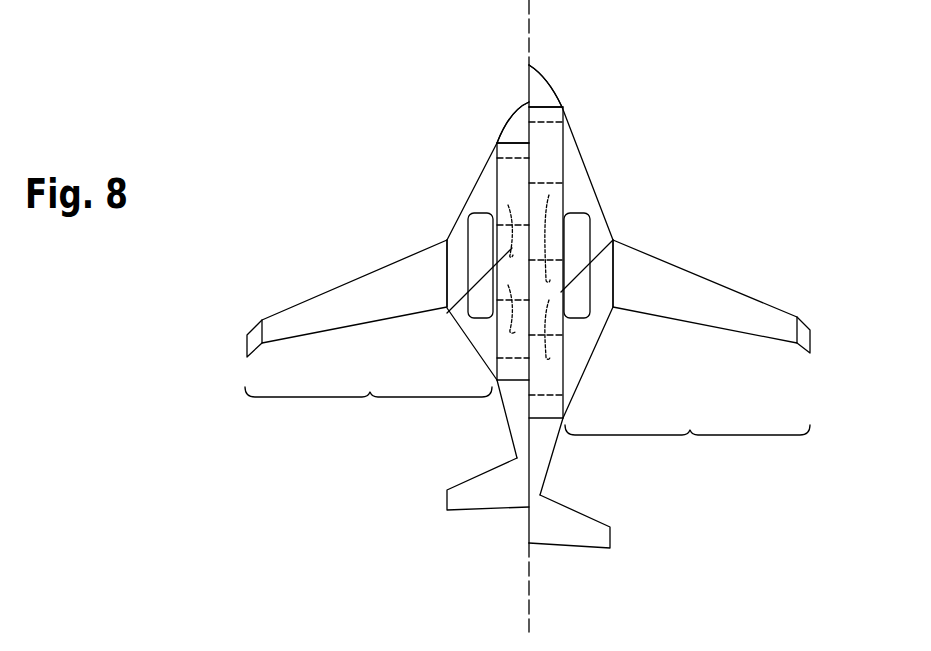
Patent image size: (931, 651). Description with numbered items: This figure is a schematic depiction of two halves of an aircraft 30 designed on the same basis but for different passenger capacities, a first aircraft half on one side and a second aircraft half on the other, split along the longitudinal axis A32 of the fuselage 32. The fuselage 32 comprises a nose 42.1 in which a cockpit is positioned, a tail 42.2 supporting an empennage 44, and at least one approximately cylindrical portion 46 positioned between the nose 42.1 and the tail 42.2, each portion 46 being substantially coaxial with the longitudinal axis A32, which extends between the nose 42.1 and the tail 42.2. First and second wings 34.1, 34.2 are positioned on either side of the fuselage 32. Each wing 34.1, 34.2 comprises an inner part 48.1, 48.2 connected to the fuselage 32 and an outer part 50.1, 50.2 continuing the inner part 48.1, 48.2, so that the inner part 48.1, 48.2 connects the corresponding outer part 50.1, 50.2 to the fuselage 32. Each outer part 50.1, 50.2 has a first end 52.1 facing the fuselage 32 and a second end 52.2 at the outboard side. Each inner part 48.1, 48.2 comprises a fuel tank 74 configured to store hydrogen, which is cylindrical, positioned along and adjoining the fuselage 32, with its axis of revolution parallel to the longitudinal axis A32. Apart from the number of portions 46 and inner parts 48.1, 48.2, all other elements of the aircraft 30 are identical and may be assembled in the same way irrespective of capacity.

The longitudinal axis A32 is at (542, 0).
The aircraft 30 is at (321, 143).
The fuselage 32 is at (497, 398).
The first wing 34.1 is at (687, 451).
The second wing 34.2 is at (368, 411).
The nose 42.1 is at (537, 88).
The tail 42.2 is at (511, 433).
The empennage 44 is at (550, 527).
The cylindrical portion 46 is at (545, 262).
The inner part 48.1 is at (580, 147).
The inner part 48.2 is at (478, 179).
The outer part 50.1 is at (699, 286).
The outer part 50.2 is at (346, 291).
The first end 52.1 is at (438, 258).
The second end 52.2 is at (272, 330).
The fuel tank 74 is at (480, 252).